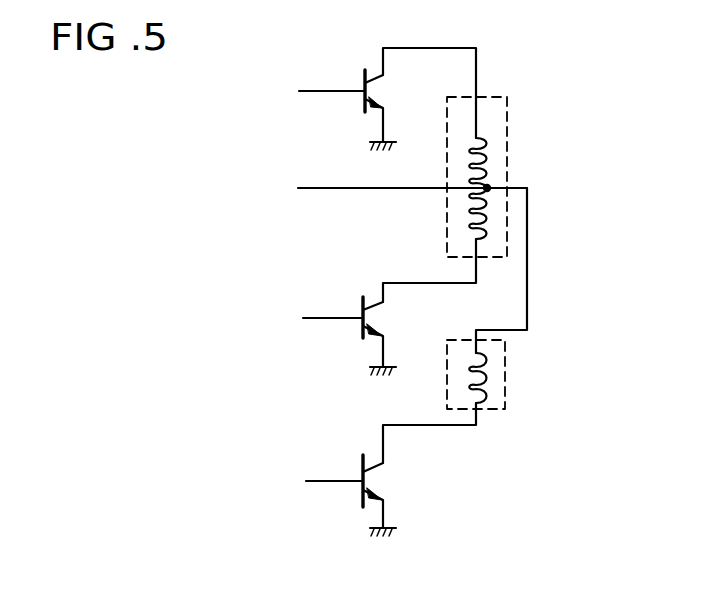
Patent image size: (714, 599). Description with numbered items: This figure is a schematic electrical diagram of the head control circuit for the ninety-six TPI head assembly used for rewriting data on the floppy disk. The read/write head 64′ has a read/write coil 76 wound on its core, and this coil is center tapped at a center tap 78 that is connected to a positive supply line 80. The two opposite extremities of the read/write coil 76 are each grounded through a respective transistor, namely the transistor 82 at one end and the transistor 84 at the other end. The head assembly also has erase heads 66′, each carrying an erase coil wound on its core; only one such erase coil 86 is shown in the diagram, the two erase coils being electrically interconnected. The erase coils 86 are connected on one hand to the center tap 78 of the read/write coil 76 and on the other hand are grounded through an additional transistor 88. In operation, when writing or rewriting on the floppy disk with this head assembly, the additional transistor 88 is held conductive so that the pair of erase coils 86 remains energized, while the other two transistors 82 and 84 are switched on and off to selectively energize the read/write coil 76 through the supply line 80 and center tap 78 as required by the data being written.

The transistor 82 is at (365, 80).
The transistor 84 is at (360, 325).
The additional transistor 88 is at (362, 470).
The positive supply line 80 is at (322, 190).
The read/write head 64′ is at (508, 152).
The read/write coil 76 is at (487, 170).
The center tap 78 is at (491, 187).
The erase heads 66′ is at (506, 375).
The erase coil 86 is at (488, 396).